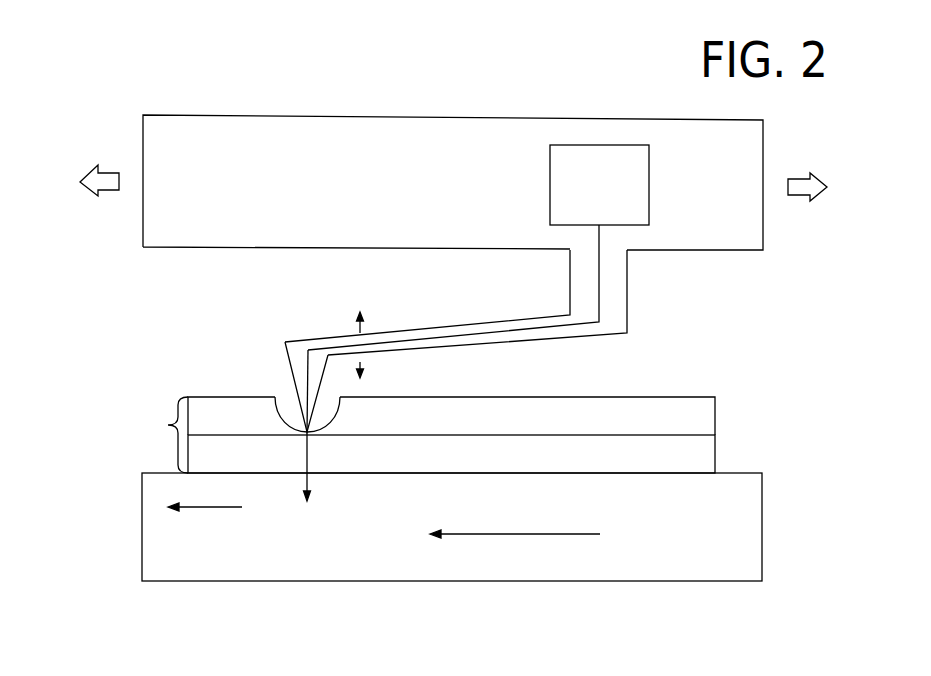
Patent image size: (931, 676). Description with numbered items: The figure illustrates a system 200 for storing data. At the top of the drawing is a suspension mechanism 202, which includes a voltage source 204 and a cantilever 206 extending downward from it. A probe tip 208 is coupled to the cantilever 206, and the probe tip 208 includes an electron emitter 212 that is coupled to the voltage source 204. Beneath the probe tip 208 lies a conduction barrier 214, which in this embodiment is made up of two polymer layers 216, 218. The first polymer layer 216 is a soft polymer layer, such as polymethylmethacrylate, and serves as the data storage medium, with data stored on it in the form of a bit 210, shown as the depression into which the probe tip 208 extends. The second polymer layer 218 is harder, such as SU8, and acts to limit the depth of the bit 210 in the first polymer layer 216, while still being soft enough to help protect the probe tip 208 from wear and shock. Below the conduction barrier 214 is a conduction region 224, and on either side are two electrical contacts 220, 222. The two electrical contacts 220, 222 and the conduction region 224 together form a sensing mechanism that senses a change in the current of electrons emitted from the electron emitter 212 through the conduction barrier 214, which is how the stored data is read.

The system 200 is at (125, 70).
The suspension mechanism 202 is at (693, 118).
The voltage source 204 is at (649, 185).
The cantilever 206 is at (628, 300).
The probe tip 208 is at (280, 365).
The bit 210 is at (280, 395).
The electron emitter 212 is at (314, 402).
The conduction barrier 214 is at (154, 435).
The first polymer layer 216 is at (715, 410).
The second polymer layer 218 is at (715, 450).
The electrical contact 220 is at (72, 438).
The electrical contact 222 is at (802, 473).
The conduction region 224 is at (142, 540).